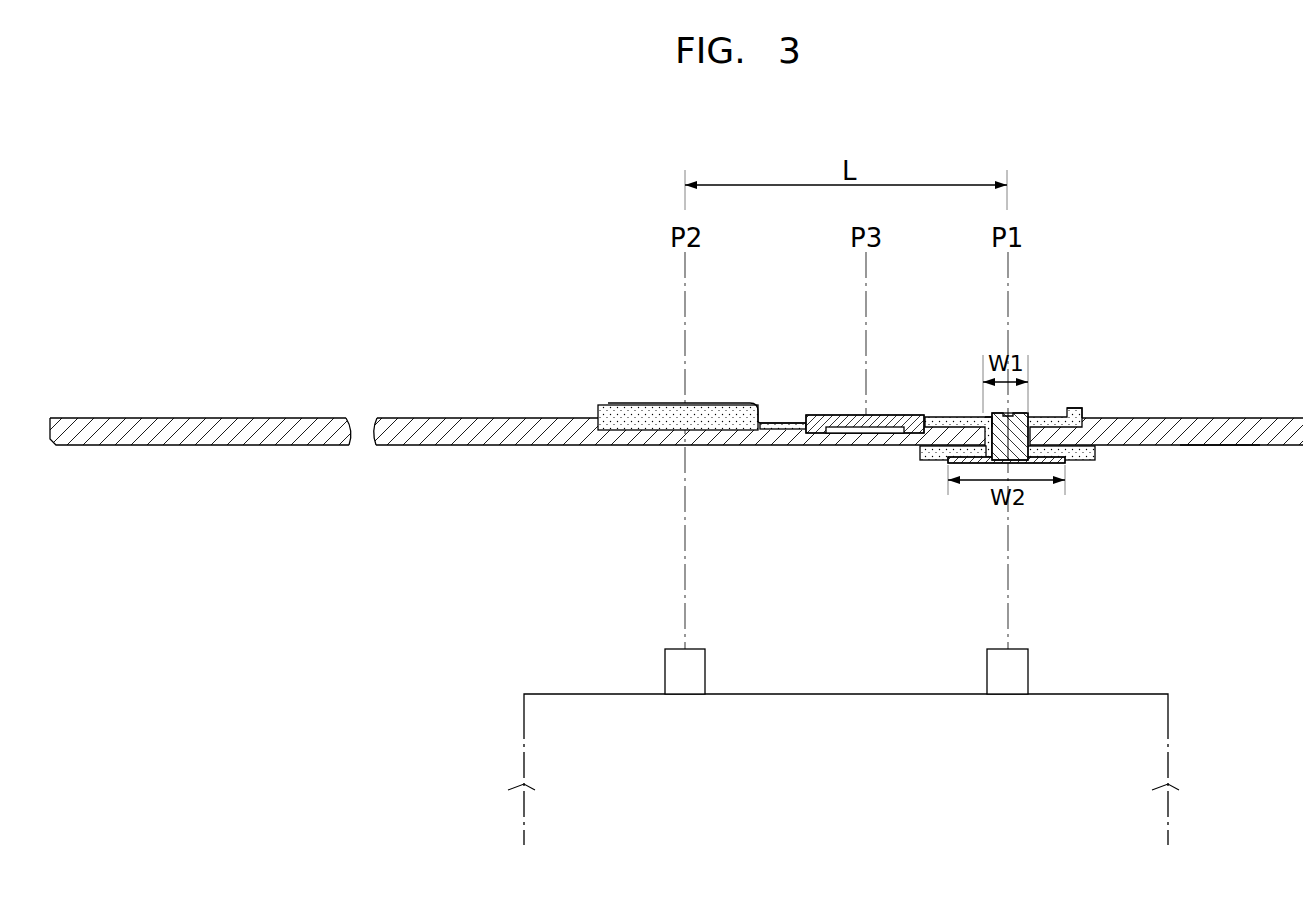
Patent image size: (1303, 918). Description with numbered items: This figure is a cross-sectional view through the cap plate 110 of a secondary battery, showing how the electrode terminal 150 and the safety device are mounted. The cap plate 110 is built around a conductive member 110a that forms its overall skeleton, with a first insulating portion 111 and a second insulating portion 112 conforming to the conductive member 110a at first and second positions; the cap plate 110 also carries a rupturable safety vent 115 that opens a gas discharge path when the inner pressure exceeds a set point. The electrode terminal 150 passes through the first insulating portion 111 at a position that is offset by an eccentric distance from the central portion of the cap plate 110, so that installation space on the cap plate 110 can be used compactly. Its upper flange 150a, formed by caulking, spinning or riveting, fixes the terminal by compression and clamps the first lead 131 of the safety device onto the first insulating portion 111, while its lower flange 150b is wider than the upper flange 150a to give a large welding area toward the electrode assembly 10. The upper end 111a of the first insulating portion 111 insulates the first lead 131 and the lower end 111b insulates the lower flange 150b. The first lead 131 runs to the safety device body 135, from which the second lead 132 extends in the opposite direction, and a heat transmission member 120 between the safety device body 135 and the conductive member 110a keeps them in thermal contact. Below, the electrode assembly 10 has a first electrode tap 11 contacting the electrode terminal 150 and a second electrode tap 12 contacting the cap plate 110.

The electrode assembly 10 is at (1150, 667).
The first electrode tap 11 is at (1016, 668).
The second electrode tap 12 is at (700, 670).
The cap plate 110 is at (1248, 398).
The conductive member 110a is at (1220, 446).
The first insulating portion 111 is at (1098, 407).
The upper end of first insulating portion 111a is at (1080, 407).
The lower end of first insulating portion 111b is at (1096, 460).
The second insulating portion 112 is at (718, 424).
The safety vent 115 is at (366, 417).
The heat transmission member 120 is at (912, 434).
The first lead 131 is at (962, 416).
The second lead 132 is at (654, 403).
The safety device body 135 is at (830, 415).
The electrode terminal 150 is at (1015, 427).
The upper flange 150a is at (987, 414).
The lower flange 150b is at (1062, 464).